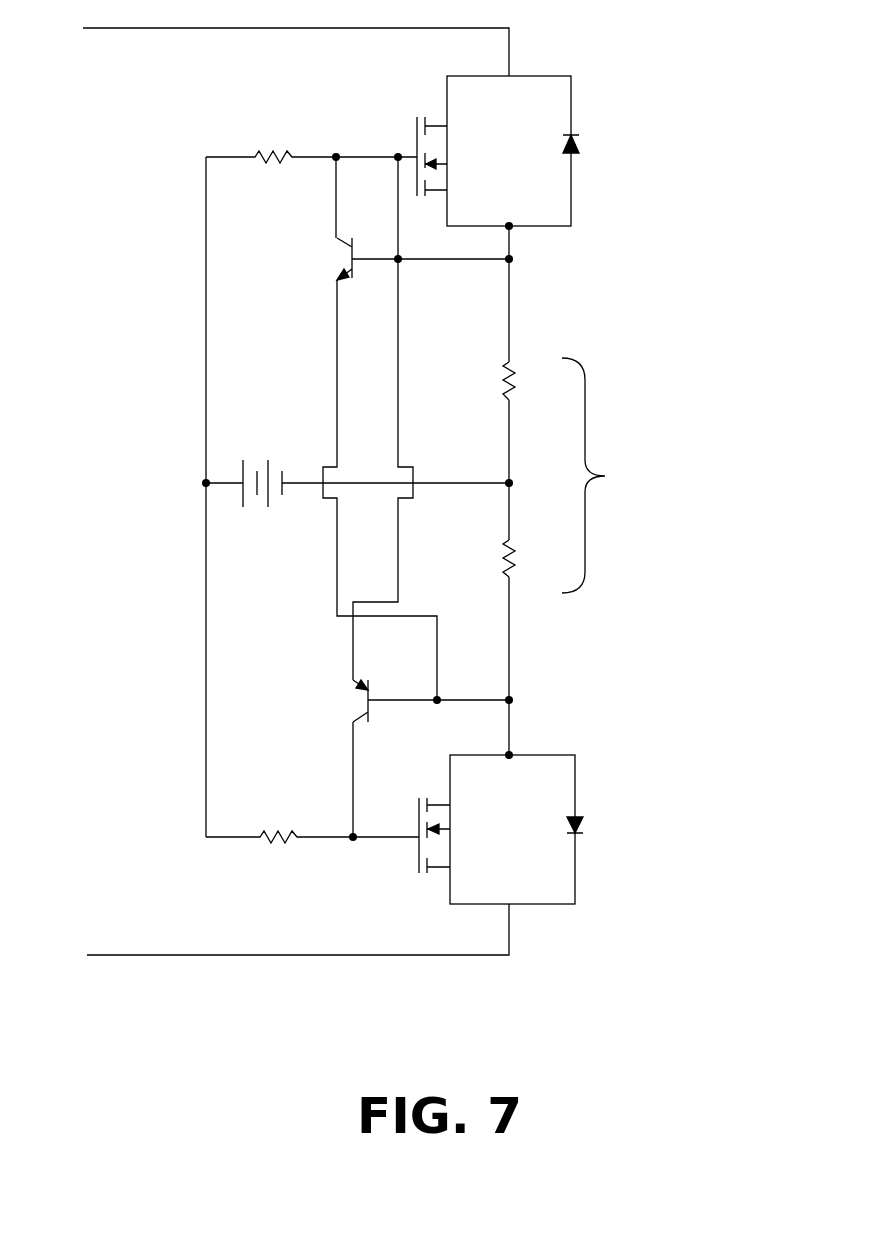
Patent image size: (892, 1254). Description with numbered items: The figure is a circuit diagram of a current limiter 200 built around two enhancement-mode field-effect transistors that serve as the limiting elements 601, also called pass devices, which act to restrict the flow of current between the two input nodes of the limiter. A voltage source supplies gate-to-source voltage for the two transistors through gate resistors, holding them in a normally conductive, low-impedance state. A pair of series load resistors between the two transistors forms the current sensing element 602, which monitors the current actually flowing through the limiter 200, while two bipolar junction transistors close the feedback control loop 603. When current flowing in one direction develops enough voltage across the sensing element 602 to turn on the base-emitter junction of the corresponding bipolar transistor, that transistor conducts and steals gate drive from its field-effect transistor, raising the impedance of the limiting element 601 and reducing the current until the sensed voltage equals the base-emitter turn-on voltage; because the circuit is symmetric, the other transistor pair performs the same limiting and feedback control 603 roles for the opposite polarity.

The current limiter 200 is at (697, 377).
The limiting element 601 is at (425, 70).
The current sensing element 602 is at (627, 472).
The feedback control element 603 is at (306, 297).